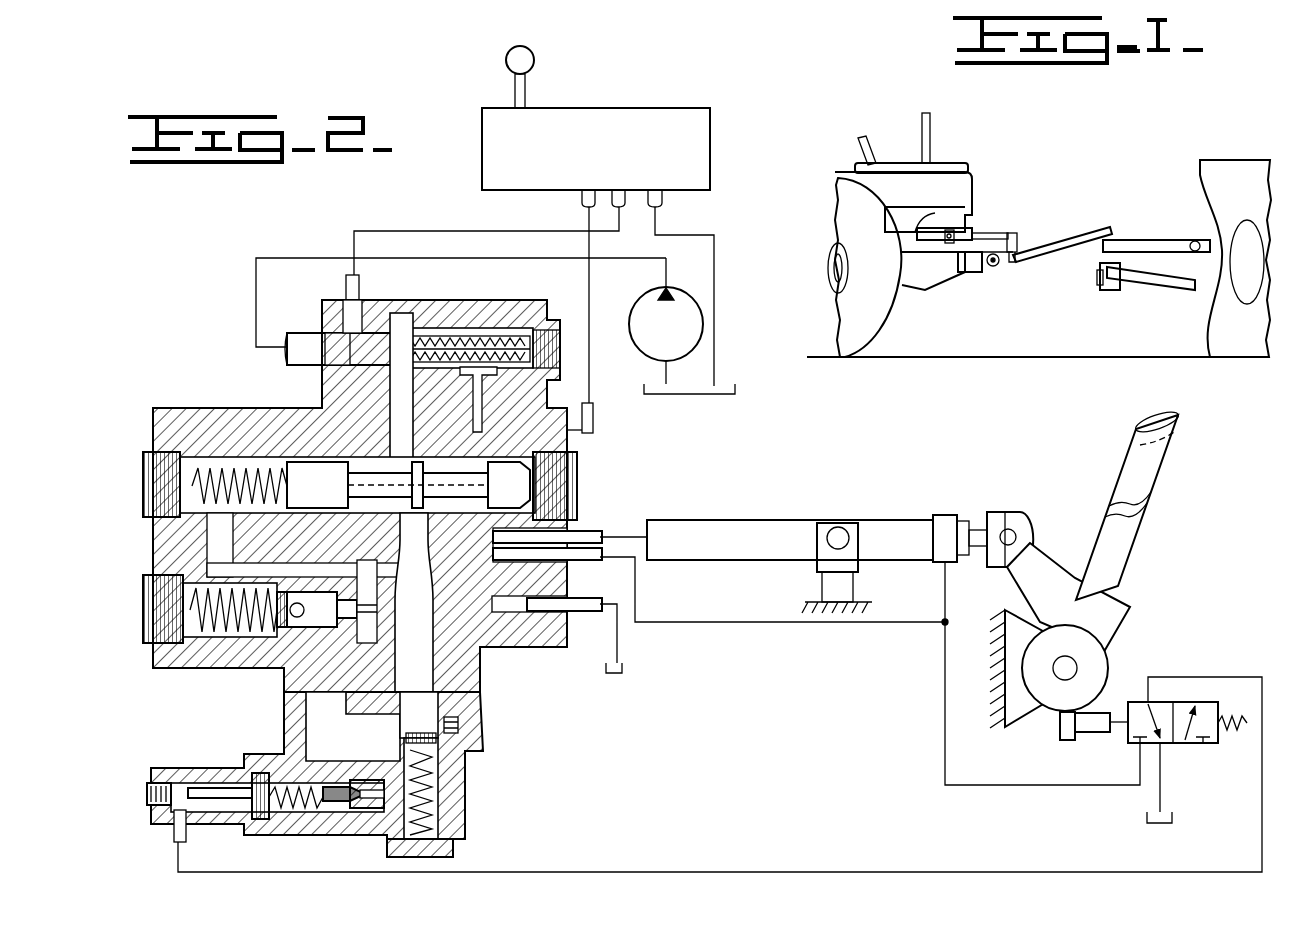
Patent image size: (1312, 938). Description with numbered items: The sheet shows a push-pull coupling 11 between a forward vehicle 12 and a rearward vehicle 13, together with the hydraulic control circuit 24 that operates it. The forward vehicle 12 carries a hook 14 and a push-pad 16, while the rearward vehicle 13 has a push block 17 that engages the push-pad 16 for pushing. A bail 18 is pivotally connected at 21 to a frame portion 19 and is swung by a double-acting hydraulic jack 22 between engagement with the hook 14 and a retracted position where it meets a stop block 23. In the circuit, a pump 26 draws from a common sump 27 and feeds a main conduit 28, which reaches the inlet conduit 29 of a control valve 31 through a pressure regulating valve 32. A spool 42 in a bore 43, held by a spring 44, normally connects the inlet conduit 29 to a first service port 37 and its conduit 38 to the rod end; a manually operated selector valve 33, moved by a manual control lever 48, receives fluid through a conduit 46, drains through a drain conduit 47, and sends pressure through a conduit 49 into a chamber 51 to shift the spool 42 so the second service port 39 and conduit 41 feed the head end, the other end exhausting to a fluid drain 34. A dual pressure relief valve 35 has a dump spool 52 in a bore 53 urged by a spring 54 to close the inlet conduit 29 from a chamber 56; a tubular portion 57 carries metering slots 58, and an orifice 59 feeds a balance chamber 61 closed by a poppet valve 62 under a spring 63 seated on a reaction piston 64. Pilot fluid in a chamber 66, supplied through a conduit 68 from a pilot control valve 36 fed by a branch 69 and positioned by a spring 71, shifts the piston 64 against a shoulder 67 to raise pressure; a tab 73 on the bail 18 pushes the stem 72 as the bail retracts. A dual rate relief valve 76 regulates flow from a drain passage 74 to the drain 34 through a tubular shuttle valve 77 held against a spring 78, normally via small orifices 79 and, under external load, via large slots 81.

In FIG. 1, the push-pull coupling 11 is at (1070, 185).
In FIG. 1, the forward vehicle 12 is at (1225, 165).
In FIG. 1, the rearward vehicle 13 is at (948, 170).
In FIG. 1, the hook 14 is at (1112, 230).
In FIG. 1, the push-pad 16 is at (1108, 290).
In FIG. 1, the push block 17 is at (1015, 260).
In FIG. 1, the bail 18 is at (1095, 235).
In FIG. 2, the bail 18 is at (1150, 488).
In FIG. 1, the frame portion 19 is at (970, 272).
In FIG. 2, the frame portion 19 is at (1012, 610).
In FIG. 1, the pivotal connection 21 is at (993, 268).
In FIG. 2, the pivotal connection 21 is at (1078, 668).
In FIG. 1, the double-acting hydraulic jack 22 is at (928, 230).
In FIG. 2, the double-acting hydraulic jack 22 is at (740, 522).
In FIG. 1, the stop block 23 is at (990, 236).
In FIG. 2, the stop block 23 is at (1010, 539).
In FIG. 2, the hydraulic control circuit 24 is at (505, 660).
In FIG. 2, the pump 26 is at (651, 340).
In FIG. 2, the common sump 27 is at (735, 398).
In FIG. 2, the main conduit 28 is at (256, 258).
In FIG. 2, the inlet conduit 29 is at (390, 440).
In FIG. 2, the control valve 31 is at (195, 405).
In FIG. 2, the pressure regulating valve 32 is at (428, 328).
In FIG. 2, the selector valve 33 is at (712, 118).
In FIG. 2, the fluid drain 34 is at (222, 578).
In FIG. 2, the dual pressure relief valve 35 is at (200, 724).
In FIG. 2, the pilot control valve 36 is at (1190, 752).
In FIG. 2, the first service port 37 is at (565, 570).
In FIG. 1, the conduit 38 is at (950, 215).
In FIG. 2, the conduit 38 is at (668, 620).
In FIG. 2, the second service port 39 is at (582, 532).
In FIG. 1, the conduit 41 is at (898, 232).
In FIG. 2, the conduit 41 is at (636, 522).
In FIG. 2, the spool 42 is at (305, 465).
In FIG. 2, the bore 43 is at (445, 420).
In FIG. 2, the spring 44 is at (210, 462).
In FIG. 2, the conduit 46 is at (392, 231).
In FIG. 2, the drain conduit 47 is at (714, 238).
In FIG. 2, the manual control lever 48 is at (513, 80).
In FIG. 2, the conduit 49 is at (592, 290).
In FIG. 2, the chamber 51 is at (578, 468).
In FIG. 2, the dump spool 52 is at (478, 725).
In FIG. 2, the bore 53 is at (440, 768).
In FIG. 2, the spring 54 is at (455, 847).
In FIG. 2, the chamber 56 is at (300, 705).
In FIG. 2, the tubular portion 57 is at (460, 722).
In FIG. 2, the metering slots 58 is at (418, 700).
In FIG. 2, the orifice 59 is at (400, 745).
In FIG. 2, the balance chamber 61 is at (440, 803).
In FIG. 2, the poppet valve 62 is at (340, 810).
In FIG. 2, the spring 63 is at (270, 818).
In FIG. 2, the reaction piston 64 is at (210, 788).
In FIG. 2, the chamber 66 is at (160, 805).
In FIG. 2, the shoulder 67 is at (262, 775).
In FIG. 2, the conduit 68 is at (890, 872).
In FIG. 2, the branch 69 is at (945, 695).
In FIG. 2, the spring 71 is at (1238, 700).
In FIG. 2, the stem 72 is at (1088, 732).
In FIG. 2, the tab 73 is at (1062, 732).
In FIG. 2, the drain passage 74 is at (335, 560).
In FIG. 2, the dual rate relief valve 76 is at (228, 655).
In FIG. 2, the tubular shuttle valve 77 is at (310, 627).
In FIG. 2, the spring 78 is at (160, 640).
In FIG. 2, the small orifices 79 is at (345, 618).
In FIG. 2, the large slots 81 is at (350, 618).